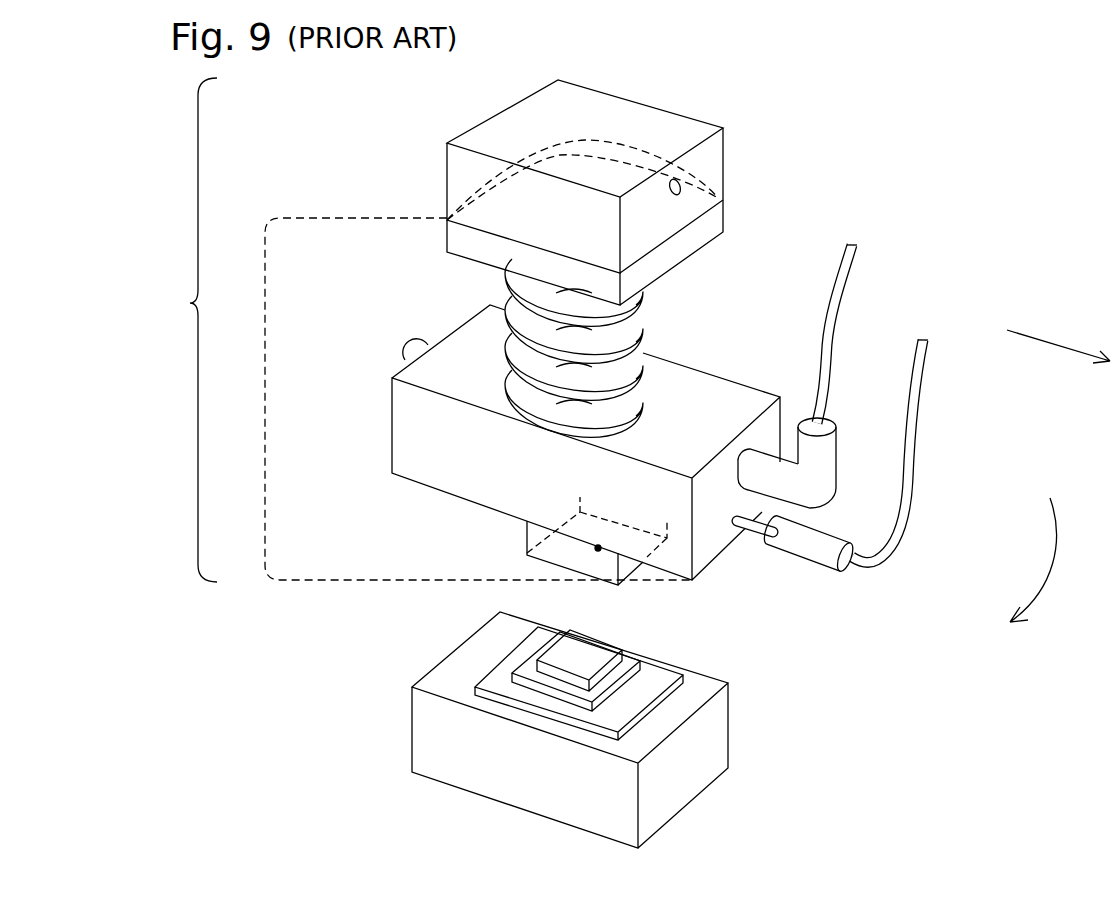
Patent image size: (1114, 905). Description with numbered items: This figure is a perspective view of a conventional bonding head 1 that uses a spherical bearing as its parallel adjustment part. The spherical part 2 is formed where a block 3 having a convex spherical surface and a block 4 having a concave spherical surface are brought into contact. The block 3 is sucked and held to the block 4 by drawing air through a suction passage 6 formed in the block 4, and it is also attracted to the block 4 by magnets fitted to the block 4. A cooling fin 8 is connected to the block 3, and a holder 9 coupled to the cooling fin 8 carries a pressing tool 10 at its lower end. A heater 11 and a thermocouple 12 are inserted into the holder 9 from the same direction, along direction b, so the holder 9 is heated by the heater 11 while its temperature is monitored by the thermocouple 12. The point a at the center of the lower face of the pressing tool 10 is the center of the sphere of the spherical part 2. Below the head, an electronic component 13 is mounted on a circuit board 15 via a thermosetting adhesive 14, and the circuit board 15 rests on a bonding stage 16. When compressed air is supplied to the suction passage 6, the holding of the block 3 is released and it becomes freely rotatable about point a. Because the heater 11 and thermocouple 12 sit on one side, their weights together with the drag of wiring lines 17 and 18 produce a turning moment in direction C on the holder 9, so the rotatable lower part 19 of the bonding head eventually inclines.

The bonding head 1 is at (193, 330).
The spherical part 2 is at (630, 147).
The block with convex-shaped spherical part 3 is at (450, 240).
The block with concave-shaped spherical part 4 is at (450, 185).
The suction passage 6 is at (683, 186).
The cooling fin 8 is at (648, 328).
The holder 9 is at (455, 470).
The pressing tool 10 is at (526, 548).
The heater 11 is at (828, 455).
The thermocouple 12 is at (753, 532).
The electronic component 13 is at (600, 650).
The thermosetting adhesive 14 is at (627, 660).
The circuit board 15 is at (660, 698).
The bonding stage 16 is at (692, 770).
The wiring line 17 is at (843, 293).
The wiring line 18 is at (913, 492).
The lower part of the bonding head 19 is at (456, 399).
The point a is at (598, 550).
The direction b is at (1058, 339).
The direction c C is at (1044, 560).